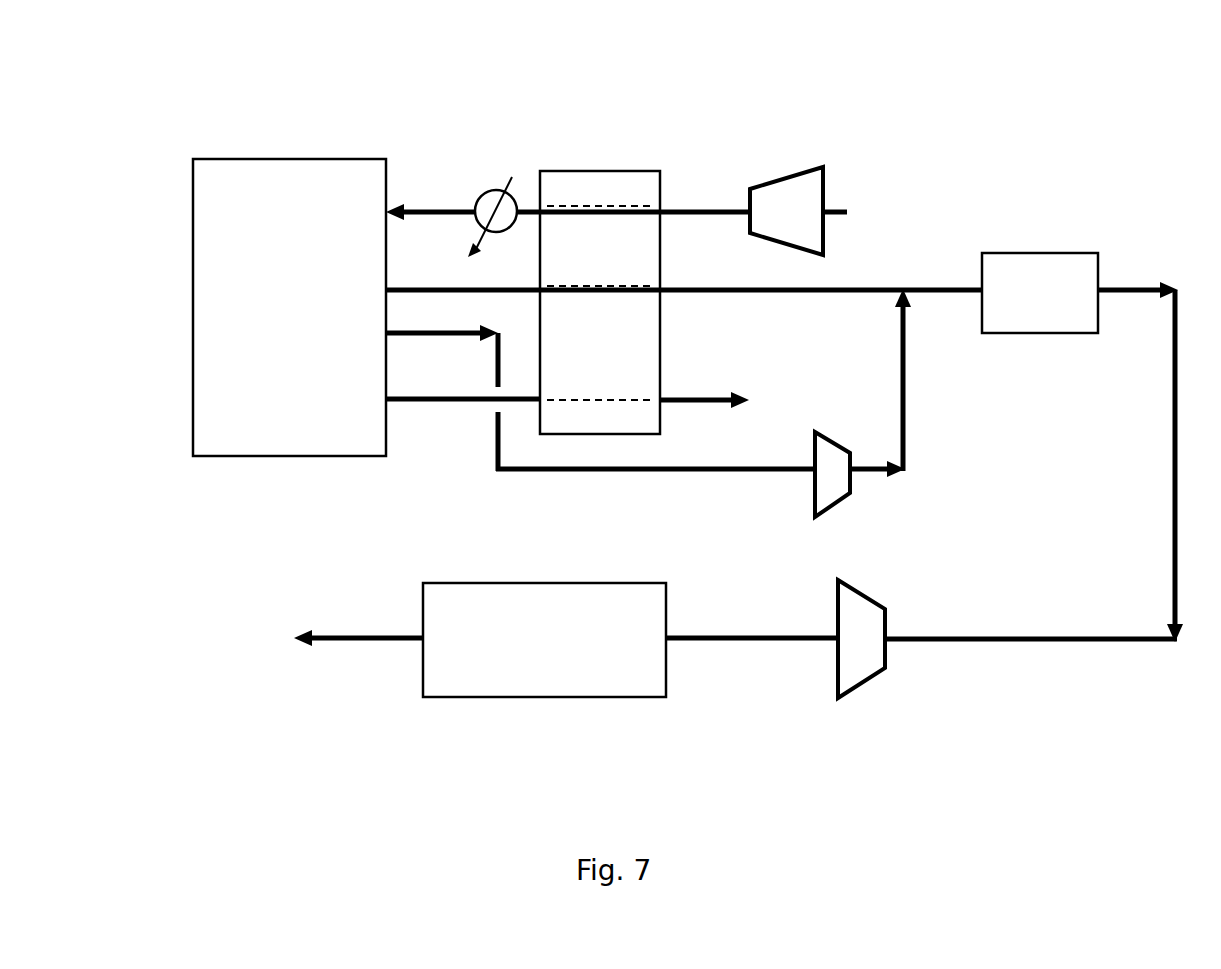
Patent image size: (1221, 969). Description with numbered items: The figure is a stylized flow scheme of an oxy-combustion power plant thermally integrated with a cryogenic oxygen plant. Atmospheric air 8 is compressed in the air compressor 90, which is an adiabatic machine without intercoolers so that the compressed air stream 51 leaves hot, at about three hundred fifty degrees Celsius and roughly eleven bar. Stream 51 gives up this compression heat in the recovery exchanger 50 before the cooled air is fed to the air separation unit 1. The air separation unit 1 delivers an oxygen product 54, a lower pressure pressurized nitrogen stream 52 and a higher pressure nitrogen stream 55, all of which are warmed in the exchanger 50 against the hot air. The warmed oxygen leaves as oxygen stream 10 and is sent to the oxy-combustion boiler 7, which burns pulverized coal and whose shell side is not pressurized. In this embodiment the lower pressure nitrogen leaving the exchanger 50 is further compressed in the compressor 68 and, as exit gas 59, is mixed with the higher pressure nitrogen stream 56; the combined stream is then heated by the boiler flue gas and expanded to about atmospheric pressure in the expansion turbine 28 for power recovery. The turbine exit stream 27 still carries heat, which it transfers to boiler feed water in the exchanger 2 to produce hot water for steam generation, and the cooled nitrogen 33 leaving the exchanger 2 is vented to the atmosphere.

The air separation unit 1 is at (274, 433).
The exchanger 2 is at (573, 673).
The oxy-combustion boiler 7 is at (1012, 265).
The atmospheric air 8 is at (838, 205).
The oxygen stream 10 is at (703, 404).
The exit stream 27 is at (768, 643).
The expansion turbine 28 is at (862, 650).
The cooled nitrogen 33 is at (385, 640).
The exchanger 50 is at (597, 183).
The compressed air stream 51 is at (700, 205).
The pressurized nitrogen stream 52 is at (478, 333).
The oxygen product 54 is at (463, 403).
The nitrogen stream 55 is at (460, 288).
The higher pressure nitrogen stream 56 is at (858, 288).
The exit gas 59 is at (905, 340).
The compressor 68 is at (827, 479).
The air compressor 90 is at (793, 195).